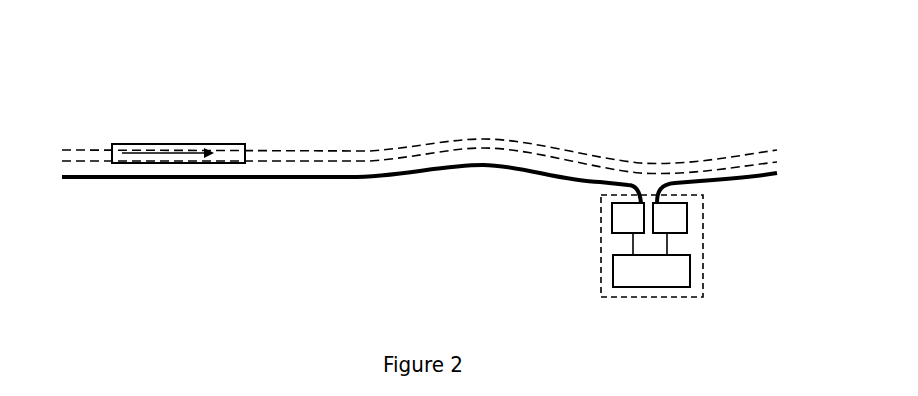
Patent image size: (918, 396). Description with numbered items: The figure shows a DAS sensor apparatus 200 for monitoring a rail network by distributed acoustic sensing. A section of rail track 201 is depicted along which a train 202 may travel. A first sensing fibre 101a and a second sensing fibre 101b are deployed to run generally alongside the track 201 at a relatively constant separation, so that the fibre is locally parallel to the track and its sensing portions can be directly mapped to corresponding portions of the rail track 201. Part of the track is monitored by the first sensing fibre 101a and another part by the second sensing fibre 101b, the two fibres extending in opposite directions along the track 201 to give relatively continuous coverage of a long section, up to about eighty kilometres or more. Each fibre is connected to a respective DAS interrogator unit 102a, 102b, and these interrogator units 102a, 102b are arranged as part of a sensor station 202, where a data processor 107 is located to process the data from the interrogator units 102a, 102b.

The DAS sensor apparatus 200 is at (362, 73).
The rail track 201 is at (482, 138).
The train 202 is at (163, 143).
The first sensing fibre 101a is at (363, 178).
The second sensing fibre 101b is at (747, 181).
The DAS interrogator unit 102a is at (612, 218).
The DAS interrogator unit 102b is at (687, 218).
The data processor 107 is at (637, 280).